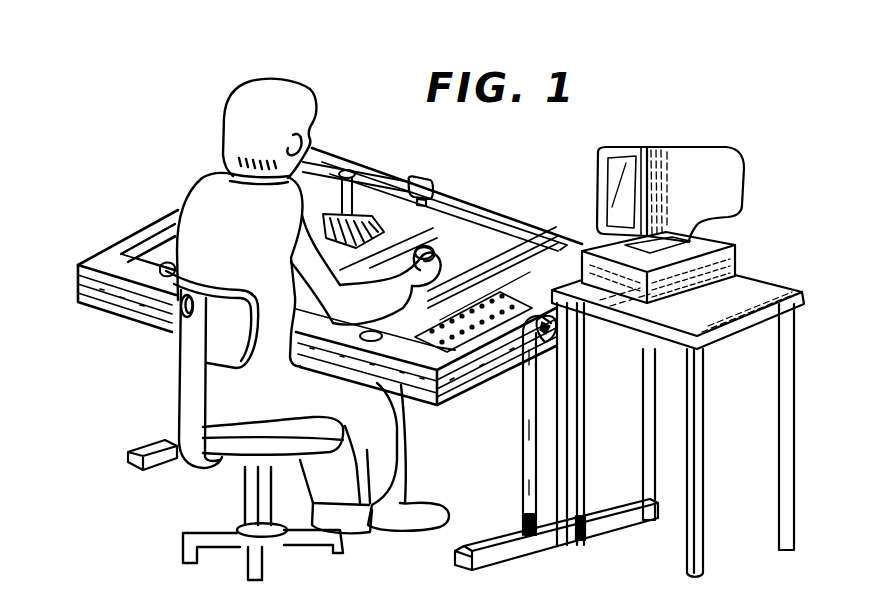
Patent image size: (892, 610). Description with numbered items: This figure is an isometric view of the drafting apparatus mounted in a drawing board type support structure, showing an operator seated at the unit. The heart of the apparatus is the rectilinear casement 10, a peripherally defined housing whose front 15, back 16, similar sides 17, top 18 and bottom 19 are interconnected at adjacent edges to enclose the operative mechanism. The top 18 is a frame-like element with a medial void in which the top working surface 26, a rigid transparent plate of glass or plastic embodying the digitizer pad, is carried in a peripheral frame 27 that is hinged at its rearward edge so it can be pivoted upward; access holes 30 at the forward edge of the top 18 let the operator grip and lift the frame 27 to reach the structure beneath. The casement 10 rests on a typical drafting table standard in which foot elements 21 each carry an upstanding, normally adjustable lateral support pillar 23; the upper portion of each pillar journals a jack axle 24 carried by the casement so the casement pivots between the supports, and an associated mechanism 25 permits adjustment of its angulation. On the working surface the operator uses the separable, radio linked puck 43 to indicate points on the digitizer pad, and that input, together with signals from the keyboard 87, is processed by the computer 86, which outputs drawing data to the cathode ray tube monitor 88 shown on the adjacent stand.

The rectilinear casement 10 is at (156, 218).
The front 15 is at (112, 298).
The back 16 is at (520, 235).
The sides 17 is at (447, 395).
The top 18 is at (533, 287).
The bottom 19 is at (150, 320).
The foot elements 21 is at (158, 448).
The lateral support pillars 23 is at (525, 485).
The jack axles 24 is at (556, 326).
The angulation adjustment mechanism 25 is at (520, 358).
The top working surface 26 is at (490, 240).
The peripheral frame 27 is at (311, 165).
The access holes 30 is at (174, 266).
The puck 43 is at (433, 254).
The computer 86 is at (736, 256).
The keyboard 87 is at (376, 230).
The cathode ray tube monitor 88 is at (682, 193).